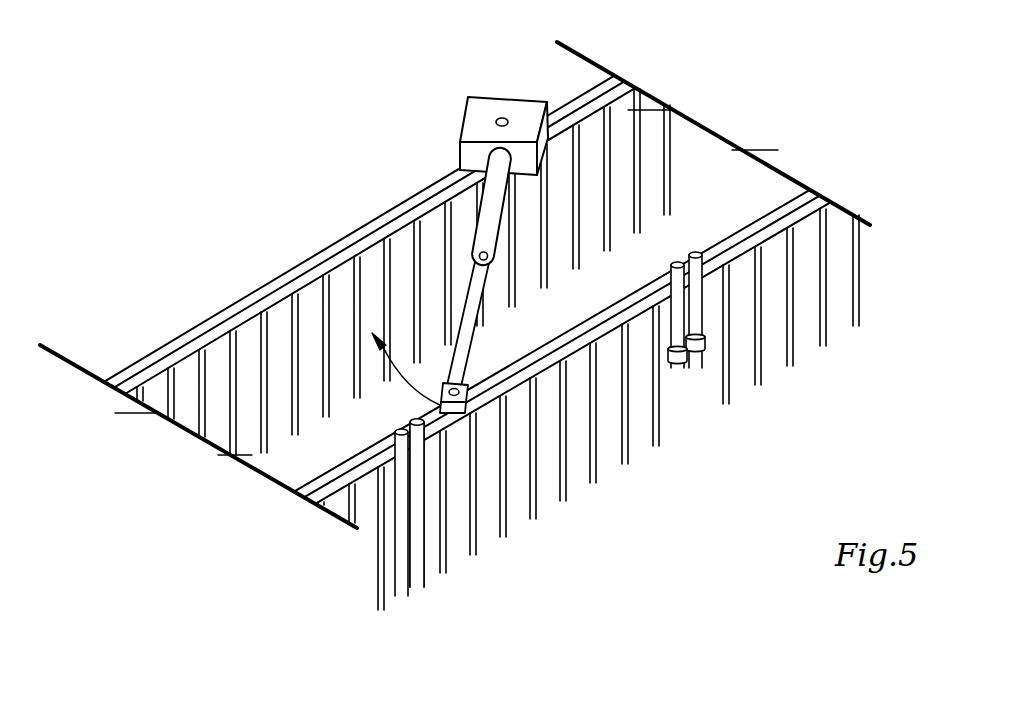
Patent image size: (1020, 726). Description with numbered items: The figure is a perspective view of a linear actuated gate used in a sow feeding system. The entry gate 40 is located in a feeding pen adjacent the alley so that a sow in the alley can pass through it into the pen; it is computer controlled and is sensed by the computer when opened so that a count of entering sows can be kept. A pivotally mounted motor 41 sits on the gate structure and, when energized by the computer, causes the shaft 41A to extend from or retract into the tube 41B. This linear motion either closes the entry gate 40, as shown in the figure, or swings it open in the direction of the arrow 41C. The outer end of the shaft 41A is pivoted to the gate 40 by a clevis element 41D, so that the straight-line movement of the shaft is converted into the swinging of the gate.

The entry gate 40 is at (636, 292).
The motor 41 is at (463, 132).
The shaft 41A is at (464, 370).
The tube 41B is at (477, 243).
The arrow 41C is at (450, 365).
The clevis element 41D is at (452, 412).